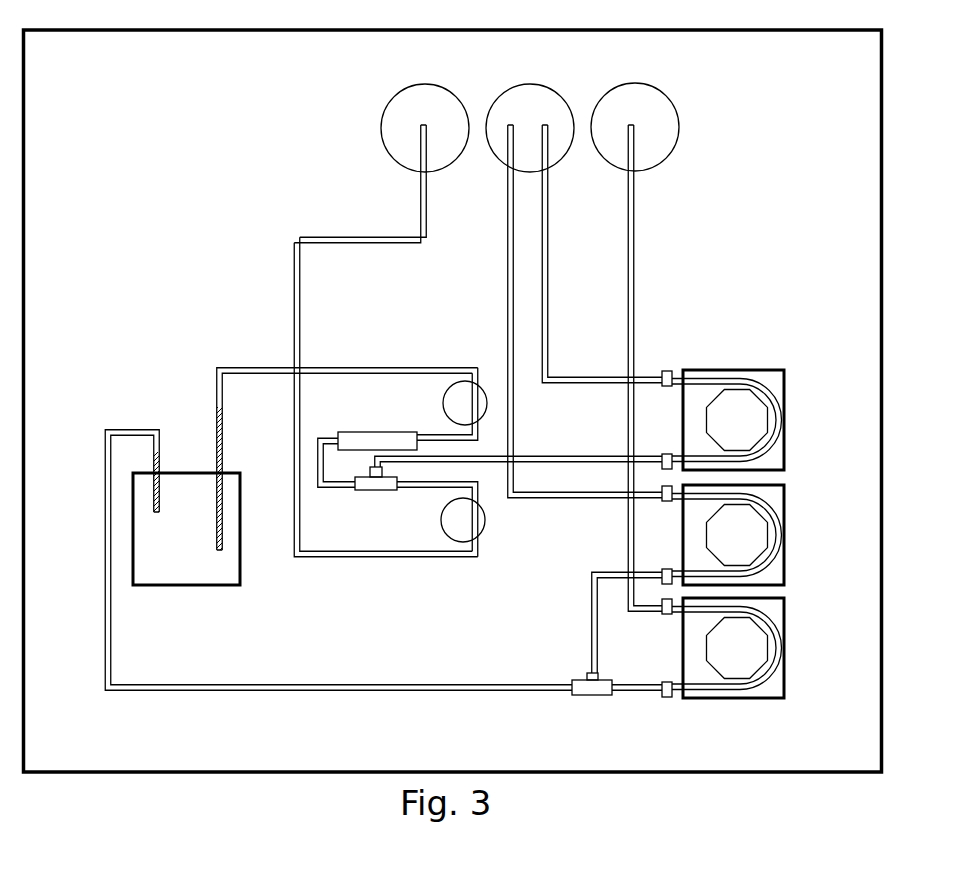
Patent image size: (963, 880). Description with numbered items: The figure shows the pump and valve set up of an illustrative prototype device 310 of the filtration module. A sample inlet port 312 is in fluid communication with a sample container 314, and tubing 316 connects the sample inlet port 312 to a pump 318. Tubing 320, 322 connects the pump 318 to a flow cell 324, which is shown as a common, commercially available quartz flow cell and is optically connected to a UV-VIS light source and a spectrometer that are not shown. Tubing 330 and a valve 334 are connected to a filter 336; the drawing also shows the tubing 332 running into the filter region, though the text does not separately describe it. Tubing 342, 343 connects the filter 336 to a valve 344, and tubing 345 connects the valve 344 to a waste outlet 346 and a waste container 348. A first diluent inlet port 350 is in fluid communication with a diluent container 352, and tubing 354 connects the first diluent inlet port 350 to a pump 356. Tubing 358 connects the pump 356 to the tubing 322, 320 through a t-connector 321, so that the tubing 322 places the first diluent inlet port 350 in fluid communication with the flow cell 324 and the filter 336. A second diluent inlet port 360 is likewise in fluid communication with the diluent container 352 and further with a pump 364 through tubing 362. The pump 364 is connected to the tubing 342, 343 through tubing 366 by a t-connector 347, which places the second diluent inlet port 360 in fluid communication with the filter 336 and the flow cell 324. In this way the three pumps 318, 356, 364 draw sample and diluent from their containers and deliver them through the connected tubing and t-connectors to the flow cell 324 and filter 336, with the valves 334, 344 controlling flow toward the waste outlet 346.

The prototype device 310 is at (158, 178).
The sample inlet port 312 is at (634, 123).
The sample container 314 is at (679, 126).
The tubing 316 is at (634, 238).
The pump 318 is at (747, 653).
The tubing 320 is at (635, 691).
The t-connector 321 is at (585, 697).
The tubing 322 is at (392, 691).
The flow cell 324 is at (180, 472).
The tubing 330 is at (254, 367).
The filter inlet tube 332 is at (480, 432).
The valve 334 is at (443, 402).
The filter 336 is at (340, 432).
The tubing 342 is at (320, 488).
The tubing 343 is at (413, 488).
The valve 344 is at (486, 520).
The tubing 345 is at (353, 237).
The waste outlet 346 is at (421, 123).
The t-connector 347 is at (362, 491).
The waste container 348 is at (381, 141).
The first diluent inlet port 350 is at (511, 123).
The diluent container 352 is at (527, 84).
The tubing 354 is at (508, 285).
The pump 356 is at (750, 533).
The tubing 358 is at (590, 620).
The second diluent inlet port 360 is at (546, 123).
The tubing 362 is at (548, 208).
The pump 364 is at (748, 408).
The tubing 366 is at (588, 456).